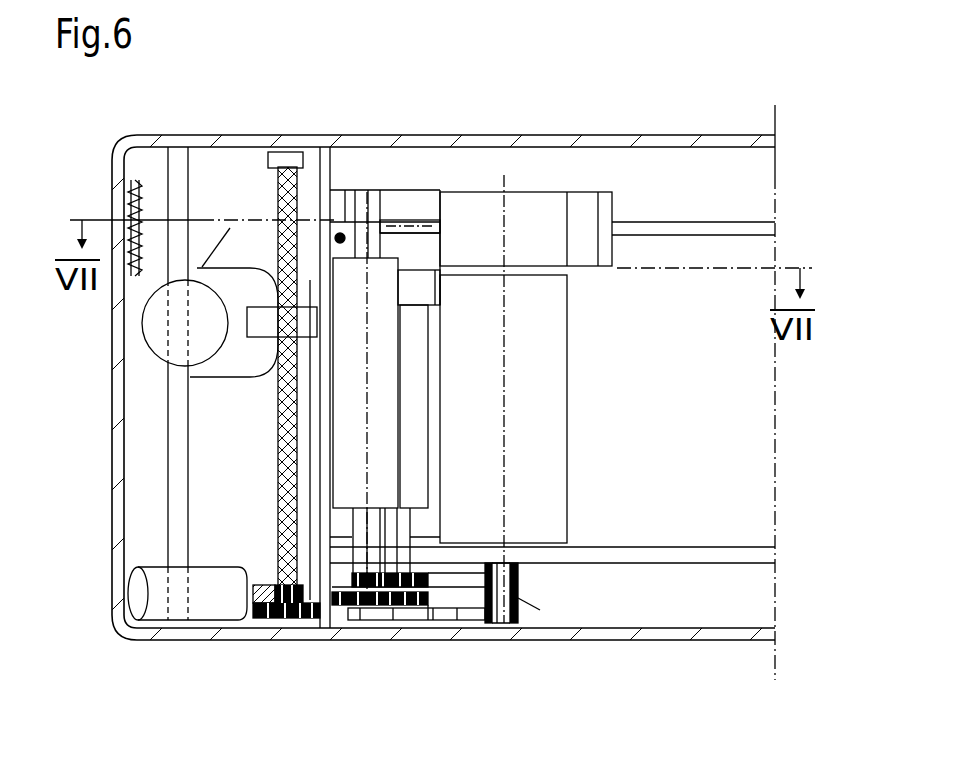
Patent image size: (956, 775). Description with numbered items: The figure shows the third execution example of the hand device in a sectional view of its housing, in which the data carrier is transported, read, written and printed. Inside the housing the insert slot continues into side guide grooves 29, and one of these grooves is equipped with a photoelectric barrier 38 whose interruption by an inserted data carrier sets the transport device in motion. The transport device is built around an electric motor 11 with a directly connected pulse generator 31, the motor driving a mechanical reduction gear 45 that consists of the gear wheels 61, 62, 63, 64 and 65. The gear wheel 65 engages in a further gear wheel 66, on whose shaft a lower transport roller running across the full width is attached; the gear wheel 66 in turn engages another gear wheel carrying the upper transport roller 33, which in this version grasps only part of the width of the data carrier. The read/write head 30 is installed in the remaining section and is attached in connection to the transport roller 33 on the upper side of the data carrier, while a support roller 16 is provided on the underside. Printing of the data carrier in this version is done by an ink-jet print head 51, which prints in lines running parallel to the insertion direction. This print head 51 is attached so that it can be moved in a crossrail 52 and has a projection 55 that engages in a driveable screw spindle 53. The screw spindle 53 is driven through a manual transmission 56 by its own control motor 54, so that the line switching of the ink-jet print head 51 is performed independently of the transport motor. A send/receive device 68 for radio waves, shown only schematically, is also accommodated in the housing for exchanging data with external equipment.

The electric motor 11 is at (567, 337).
The support roller 16 is at (380, 477).
The side guide grooves 29 is at (757, 558).
The read/write head 30 is at (422, 285).
The pulse generator 31 is at (605, 207).
The upper transport roller 33 is at (413, 490).
The photoelectric barrier 38 is at (343, 238).
The reduction gear 45 is at (383, 627).
The ink-jet print head 51 is at (158, 340).
The crossrail 52 is at (170, 540).
The screw spindle 53 is at (277, 467).
The control motor 54 is at (140, 603).
The projection 55 is at (275, 328).
The manual transmission 56 is at (285, 613).
The gear wheel 61 is at (520, 597).
The gear wheel 62 is at (473, 617).
The gear wheel 63 is at (428, 583).
The gear wheel 64 is at (410, 565).
The gear wheel 65 is at (430, 608).
The gear wheel 66 is at (342, 620).
The send/receive device for radio waves 68 is at (128, 198).